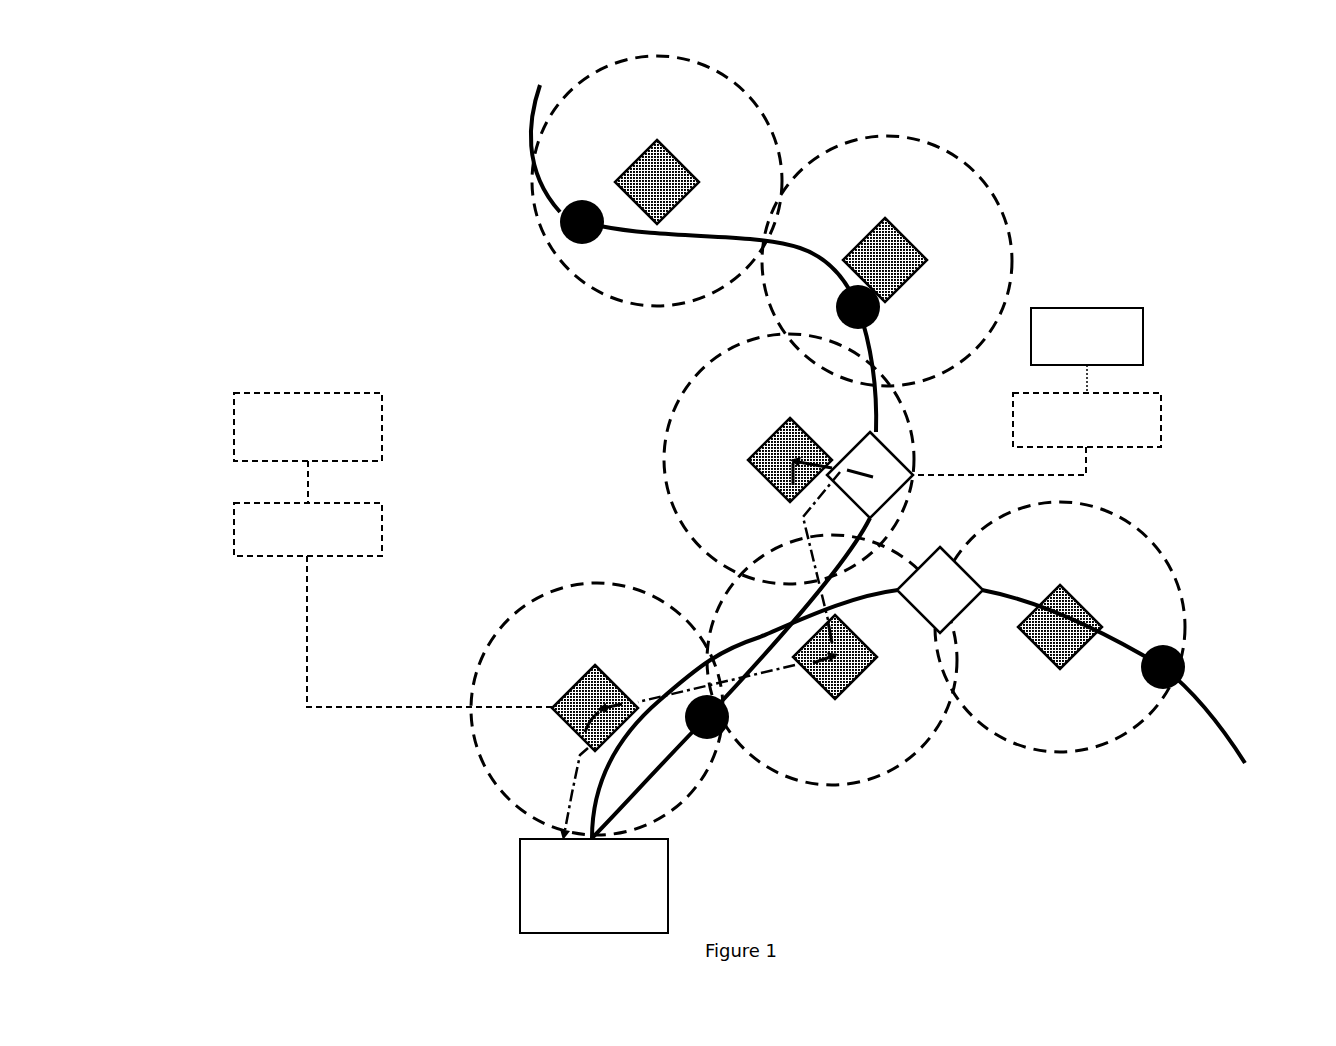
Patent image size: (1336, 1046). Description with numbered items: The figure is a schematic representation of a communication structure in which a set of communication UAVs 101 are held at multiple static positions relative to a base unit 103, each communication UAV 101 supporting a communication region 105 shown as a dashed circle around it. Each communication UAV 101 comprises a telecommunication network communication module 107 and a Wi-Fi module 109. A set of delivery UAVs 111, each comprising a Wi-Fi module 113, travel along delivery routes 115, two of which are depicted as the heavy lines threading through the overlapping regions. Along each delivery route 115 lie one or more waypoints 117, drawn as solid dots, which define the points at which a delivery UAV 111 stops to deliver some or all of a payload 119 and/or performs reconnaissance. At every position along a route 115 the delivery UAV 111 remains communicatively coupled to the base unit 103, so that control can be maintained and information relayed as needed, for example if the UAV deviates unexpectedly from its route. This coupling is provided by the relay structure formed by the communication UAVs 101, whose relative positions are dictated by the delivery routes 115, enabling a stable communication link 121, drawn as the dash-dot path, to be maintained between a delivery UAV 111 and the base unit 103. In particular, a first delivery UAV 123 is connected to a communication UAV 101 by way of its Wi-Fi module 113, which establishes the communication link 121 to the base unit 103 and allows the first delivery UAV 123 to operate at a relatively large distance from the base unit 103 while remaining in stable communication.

The communication UAV 101 is at (685, 168).
The base unit 103 is at (520, 873).
The communication region 105 is at (747, 93).
The telecommunication network communication module 107 is at (234, 420).
The Wi-Fi module 109 is at (234, 532).
The delivery UAV 111 is at (905, 509).
The Wi-Fi module 113 is at (1161, 418).
The delivery route 115 is at (897, 446).
The waypoint 117 is at (560, 222).
The payload 119 is at (1107, 308).
The communication link 121 is at (577, 772).
The first delivery UAV 123 is at (883, 450).